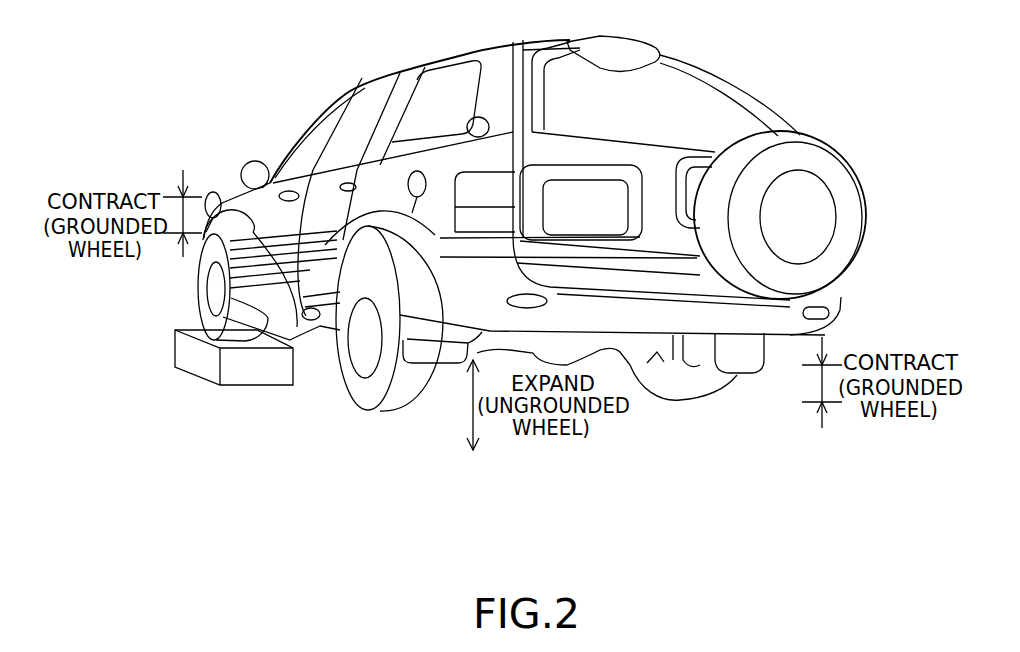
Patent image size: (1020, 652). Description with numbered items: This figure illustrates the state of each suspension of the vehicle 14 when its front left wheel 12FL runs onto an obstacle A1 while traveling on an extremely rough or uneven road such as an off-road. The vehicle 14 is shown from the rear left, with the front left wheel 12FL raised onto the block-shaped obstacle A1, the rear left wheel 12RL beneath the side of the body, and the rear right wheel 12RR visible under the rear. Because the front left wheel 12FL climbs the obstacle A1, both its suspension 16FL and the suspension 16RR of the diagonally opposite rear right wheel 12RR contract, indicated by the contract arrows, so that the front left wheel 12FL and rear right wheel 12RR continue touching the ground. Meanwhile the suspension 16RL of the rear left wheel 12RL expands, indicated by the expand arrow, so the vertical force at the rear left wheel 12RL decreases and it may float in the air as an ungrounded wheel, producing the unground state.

The vehicle 14 is at (751, 84).
The front left wheel 12FL is at (199, 290).
The rear left wheel 12RL is at (338, 378).
The rear right wheel 12RR is at (680, 399).
The suspension 16FL is at (181, 186).
The suspension 16RL is at (478, 435).
The suspension 16RR is at (822, 411).
The obstacle A1 is at (188, 373).